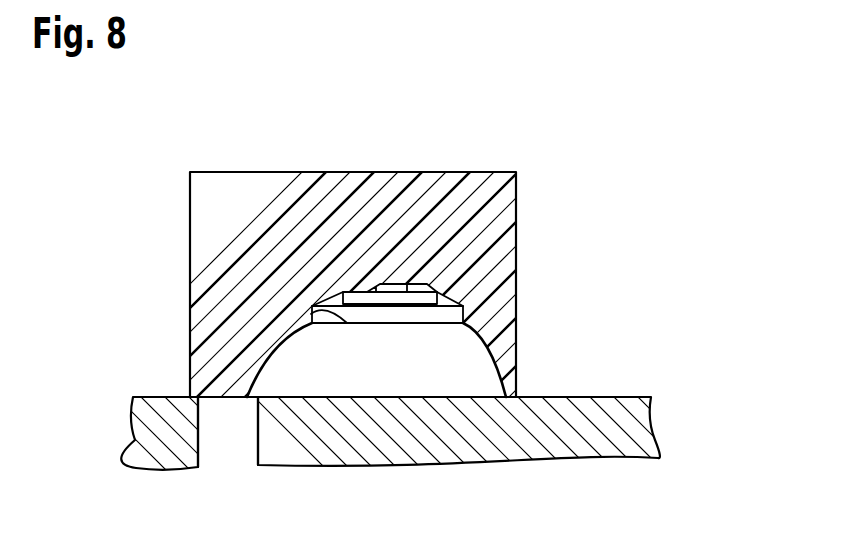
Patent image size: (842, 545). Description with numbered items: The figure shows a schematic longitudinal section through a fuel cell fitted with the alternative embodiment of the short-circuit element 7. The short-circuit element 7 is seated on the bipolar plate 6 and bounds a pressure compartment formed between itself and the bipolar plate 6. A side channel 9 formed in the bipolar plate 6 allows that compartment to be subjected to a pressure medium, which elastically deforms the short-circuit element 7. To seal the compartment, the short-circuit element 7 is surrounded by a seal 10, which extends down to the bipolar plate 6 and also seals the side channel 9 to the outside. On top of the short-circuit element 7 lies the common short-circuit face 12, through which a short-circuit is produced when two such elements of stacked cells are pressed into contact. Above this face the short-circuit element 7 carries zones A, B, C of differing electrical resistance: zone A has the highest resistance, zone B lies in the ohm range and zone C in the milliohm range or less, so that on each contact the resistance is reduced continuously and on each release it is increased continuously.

The seal 10 is at (225, 235).
The short-circuit face 12 is at (311, 322).
The short-circuit element 7 is at (495, 355).
The bipolar plate 6 is at (335, 440).
The side channel 9 is at (225, 443).
The zone A is at (405, 281).
The zone B is at (440, 292).
The zone C is at (447, 313).